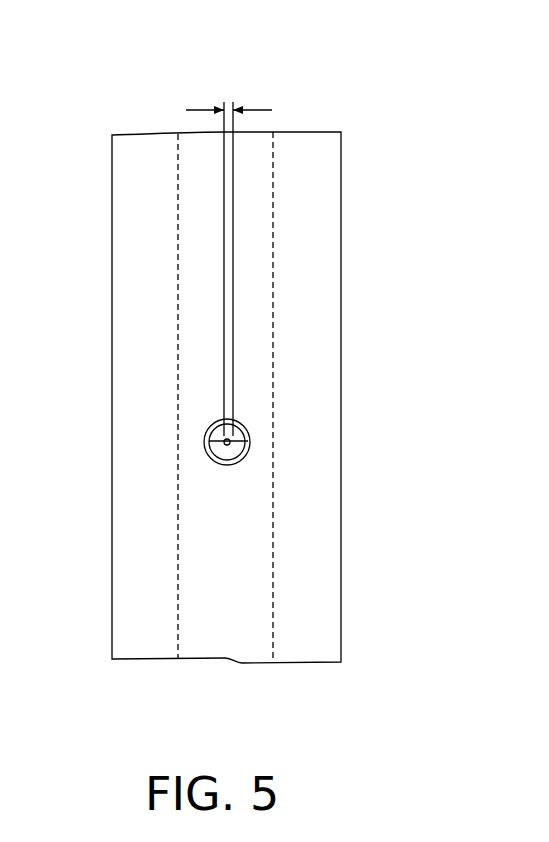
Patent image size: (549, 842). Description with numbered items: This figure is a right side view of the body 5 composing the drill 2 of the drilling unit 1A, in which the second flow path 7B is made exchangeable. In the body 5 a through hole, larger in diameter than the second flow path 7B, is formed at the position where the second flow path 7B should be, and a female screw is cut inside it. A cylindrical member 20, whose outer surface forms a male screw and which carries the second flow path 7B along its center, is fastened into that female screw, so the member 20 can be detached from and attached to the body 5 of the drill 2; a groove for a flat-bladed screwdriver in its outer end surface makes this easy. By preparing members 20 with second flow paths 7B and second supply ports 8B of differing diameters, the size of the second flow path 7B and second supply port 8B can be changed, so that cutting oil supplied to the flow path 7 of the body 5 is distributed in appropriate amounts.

The cutting insert assembly 1A is at (98, 94).
The body 2 is at (101, 156).
The side portion 5 is at (112, 440).
The slit 7 is at (253, 217).
The slit end portion 7B is at (250, 446).
The hole 8B is at (480, 537).
The circular hole 20 is at (250, 431).